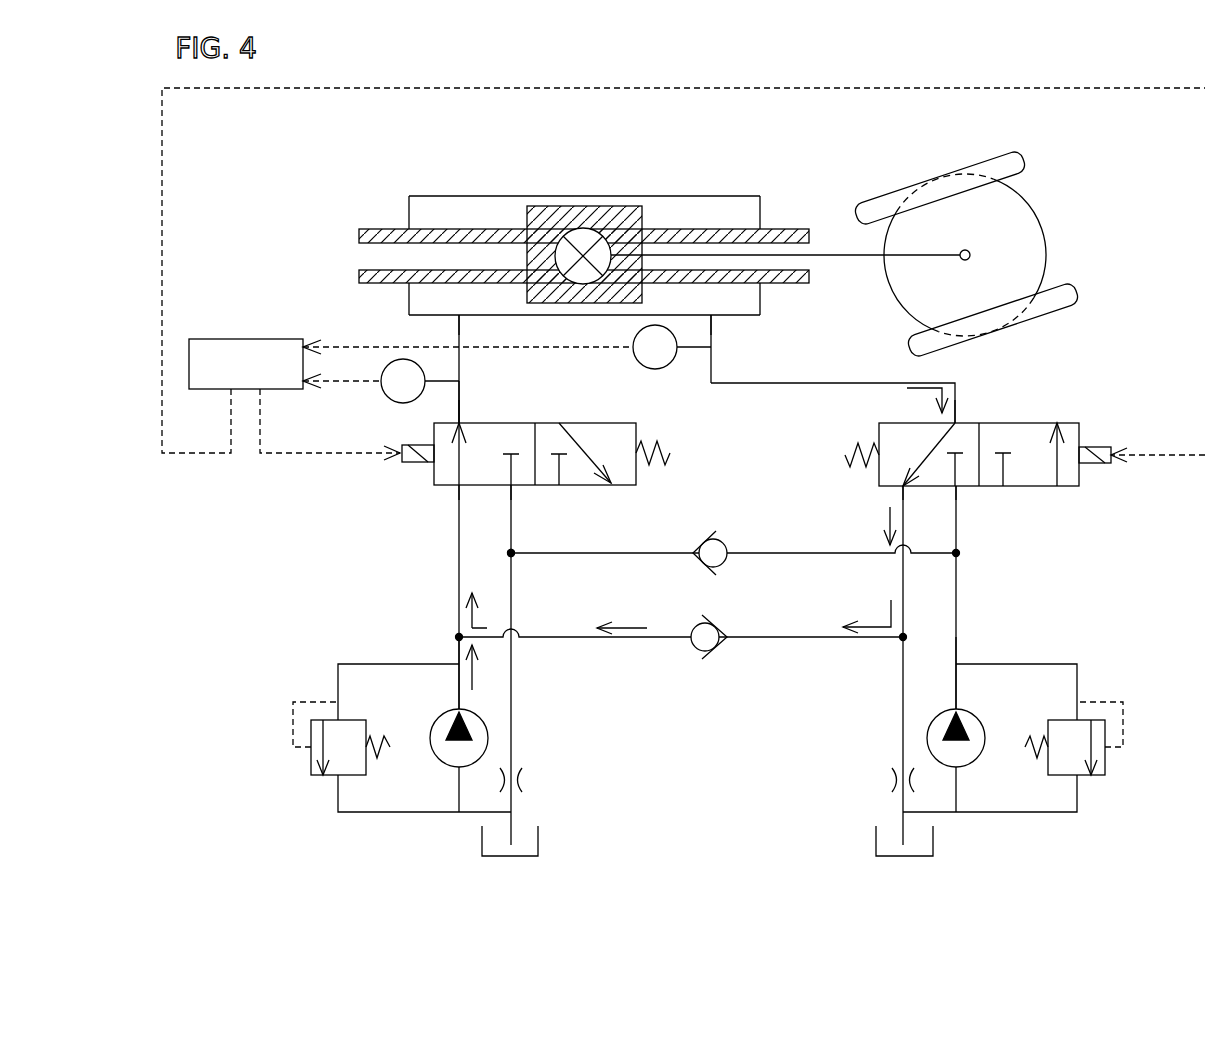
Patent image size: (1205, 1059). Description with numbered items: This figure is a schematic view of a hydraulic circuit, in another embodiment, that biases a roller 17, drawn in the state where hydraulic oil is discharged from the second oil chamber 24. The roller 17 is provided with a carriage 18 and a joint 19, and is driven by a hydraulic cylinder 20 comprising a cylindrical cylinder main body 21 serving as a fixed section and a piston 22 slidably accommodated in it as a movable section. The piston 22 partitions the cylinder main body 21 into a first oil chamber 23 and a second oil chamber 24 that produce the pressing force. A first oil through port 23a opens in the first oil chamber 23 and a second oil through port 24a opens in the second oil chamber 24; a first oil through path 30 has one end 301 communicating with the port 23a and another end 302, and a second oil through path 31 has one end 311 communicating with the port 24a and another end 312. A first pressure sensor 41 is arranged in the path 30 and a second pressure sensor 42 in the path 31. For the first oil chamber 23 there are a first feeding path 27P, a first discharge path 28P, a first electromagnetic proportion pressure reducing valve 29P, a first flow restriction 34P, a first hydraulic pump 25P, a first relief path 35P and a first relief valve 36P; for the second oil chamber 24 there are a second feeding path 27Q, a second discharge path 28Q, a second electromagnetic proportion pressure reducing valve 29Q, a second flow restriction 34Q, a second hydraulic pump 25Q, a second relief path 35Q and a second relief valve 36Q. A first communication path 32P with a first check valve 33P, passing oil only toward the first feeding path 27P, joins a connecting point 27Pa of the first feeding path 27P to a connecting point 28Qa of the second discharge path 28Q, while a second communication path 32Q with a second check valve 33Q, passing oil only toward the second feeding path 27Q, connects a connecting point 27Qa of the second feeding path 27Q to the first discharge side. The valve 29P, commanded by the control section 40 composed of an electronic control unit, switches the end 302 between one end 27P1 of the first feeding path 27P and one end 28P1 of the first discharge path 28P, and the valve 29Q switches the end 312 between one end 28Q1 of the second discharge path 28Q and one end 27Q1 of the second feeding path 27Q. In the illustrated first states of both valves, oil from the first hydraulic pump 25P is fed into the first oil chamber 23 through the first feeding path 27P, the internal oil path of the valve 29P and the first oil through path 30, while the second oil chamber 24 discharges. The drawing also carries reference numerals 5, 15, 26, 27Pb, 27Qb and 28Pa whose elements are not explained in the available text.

The wheel 5 is at (993, 160).
The wheel 15 is at (1040, 308).
The roller 17 is at (1020, 213).
The carriage 18 is at (838, 252).
The joint 19 is at (582, 237).
The hydraulic cylinder 20 is at (584, 210).
The cylinder main body 21 is at (675, 198).
The piston 22 is at (608, 210).
The first oil chamber 23 is at (453, 203).
The second oil chamber 24 is at (733, 205).
The first oil through port 23a is at (458, 325).
The second oil through port 24a is at (710, 317).
The first hydraulic pump 25P is at (440, 752).
The second hydraulic pump 25Q is at (975, 752).
The tank 26 is at (538, 838).
The first feeding path 27P is at (459, 553).
The connecting point 27Pa is at (459, 637).
The first supply passage downstream portion 27Pb is at (459, 663).
The one end of first feeding path 27P1 is at (459, 488).
The second feeding path 27Q is at (958, 590).
The connecting point 27Qa is at (956, 553).
The second supply passage downstream portion 27Qb is at (956, 664).
The one end of second feeding path 27Q1 is at (956, 486).
The first discharge path 28P is at (512, 530).
The first return passage junction 28Pa is at (511, 553).
The one end of first discharge path 28P1 is at (511, 488).
The second discharge path 28Q is at (903, 577).
The connecting point 28Qa is at (903, 637).
The one end of second discharge path 28Q1 is at (903, 486).
The first electromagnetic proportion pressure reducing valve 29P is at (640, 427).
The second electromagnetic proportion pressure reducing valve 29Q is at (879, 427).
The first oil through path 30 is at (459, 397).
The one end of first oil through path 301 is at (465, 333).
The other end of first oil through path 302 is at (459, 422).
The second oil through path 31 is at (855, 383).
The one end of second oil through path 311 is at (713, 350).
The other end of second oil through path 312 is at (957, 423).
The first communication path 32P is at (790, 637).
The second communication path 32Q is at (773, 553).
The first check valve 33P is at (700, 653).
The second check valve 33Q is at (715, 540).
The first flow restriction 34P is at (523, 780).
The second flow restriction 34Q is at (890, 780).
The first relief path 35P is at (338, 664).
The second relief path 35Q is at (1077, 664).
The first relief valve 36P is at (318, 775).
The second relief valve 36Q is at (1098, 775).
The control section 40 is at (244, 339).
The first pressure sensor 41 is at (385, 397).
The second pressure sensor 42 is at (640, 362).